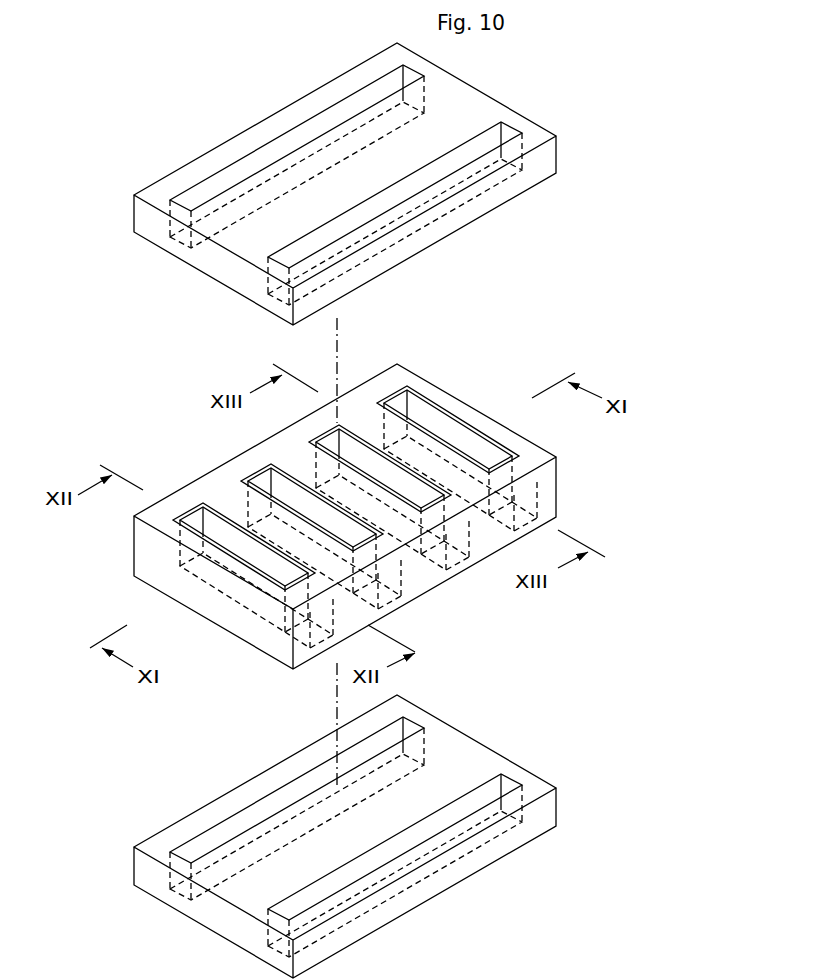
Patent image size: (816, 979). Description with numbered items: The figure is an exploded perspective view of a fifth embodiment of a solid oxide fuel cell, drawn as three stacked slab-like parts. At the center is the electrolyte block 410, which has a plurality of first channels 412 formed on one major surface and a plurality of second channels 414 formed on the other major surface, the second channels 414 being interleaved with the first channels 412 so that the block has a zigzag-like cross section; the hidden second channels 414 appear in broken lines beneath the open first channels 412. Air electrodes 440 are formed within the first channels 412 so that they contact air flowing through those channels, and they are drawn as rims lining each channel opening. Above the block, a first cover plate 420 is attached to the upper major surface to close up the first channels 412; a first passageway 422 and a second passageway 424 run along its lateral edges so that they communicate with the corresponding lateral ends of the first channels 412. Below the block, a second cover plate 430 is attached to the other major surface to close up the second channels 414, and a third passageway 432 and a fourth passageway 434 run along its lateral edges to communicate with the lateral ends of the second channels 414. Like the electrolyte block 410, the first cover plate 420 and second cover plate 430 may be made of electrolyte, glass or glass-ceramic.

The electrolyte block 410 is at (133, 548).
The first channels 412 is at (450, 426).
The second channels 414 is at (470, 510).
The air electrodes 440 is at (208, 507).
The first cover plate 420 is at (207, 170).
The first passageway 422 is at (390, 192).
The second passageway 424 is at (290, 142).
The second cover plate 430 is at (193, 823).
The third passageway 432 is at (390, 843).
The fourth passageway 434 is at (267, 803).